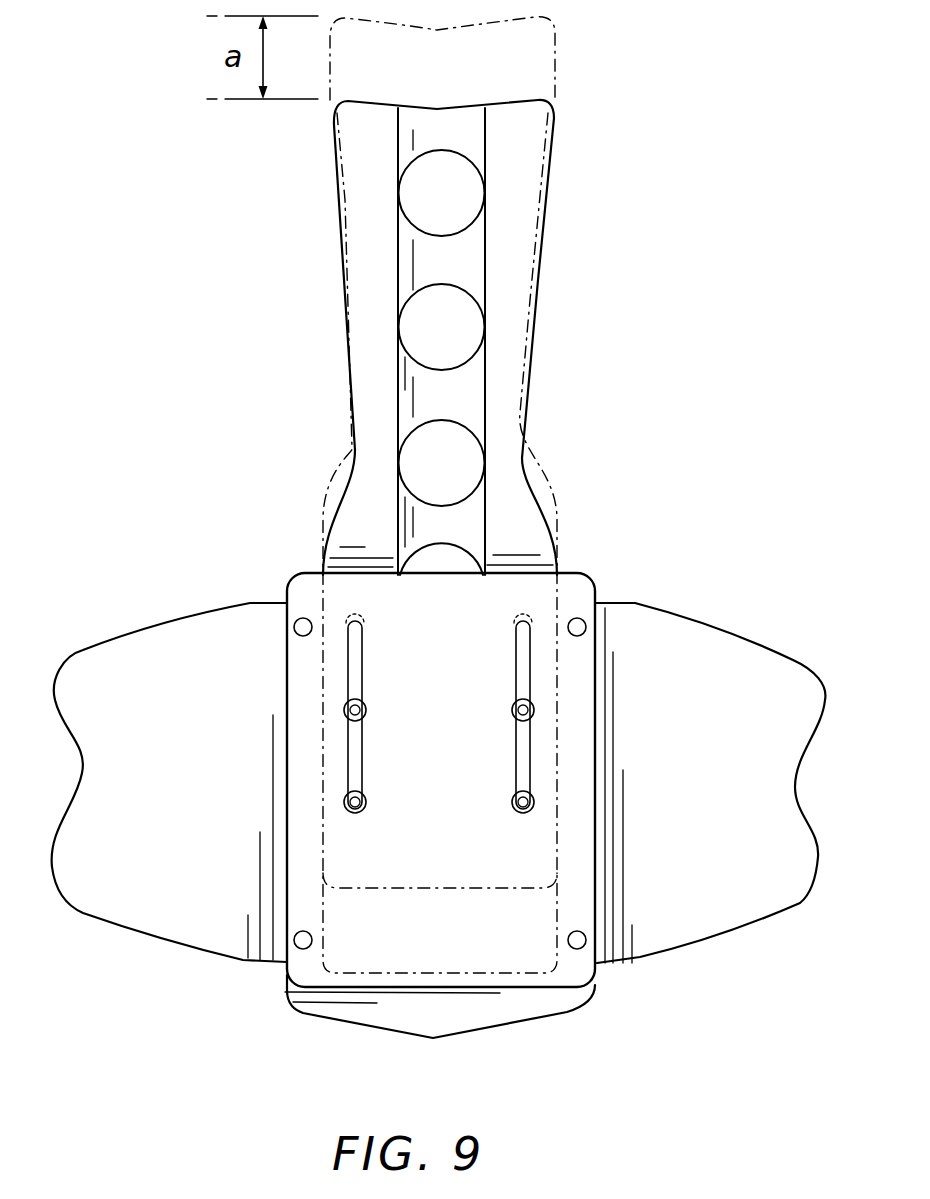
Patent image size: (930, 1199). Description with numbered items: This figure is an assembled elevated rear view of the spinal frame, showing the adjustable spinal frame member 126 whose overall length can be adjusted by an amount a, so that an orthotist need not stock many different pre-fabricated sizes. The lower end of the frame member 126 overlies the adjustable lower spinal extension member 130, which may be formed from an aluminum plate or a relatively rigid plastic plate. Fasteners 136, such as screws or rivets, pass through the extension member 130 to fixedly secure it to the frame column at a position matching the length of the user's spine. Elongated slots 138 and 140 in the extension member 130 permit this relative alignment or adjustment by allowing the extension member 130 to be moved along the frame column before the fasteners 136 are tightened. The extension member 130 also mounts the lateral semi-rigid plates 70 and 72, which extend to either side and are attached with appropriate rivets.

The lateral semi-rigid plate 70 is at (117, 678).
The lateral semi-rigid plate 72 is at (792, 672).
The adjustable spinal frame member 126 is at (612, 224).
The adjustable lower spinal extension member 130 is at (573, 577).
The fasteners 136 is at (520, 800).
The elongated slot 138 is at (407, 648).
The elongated slot 140 is at (523, 670).